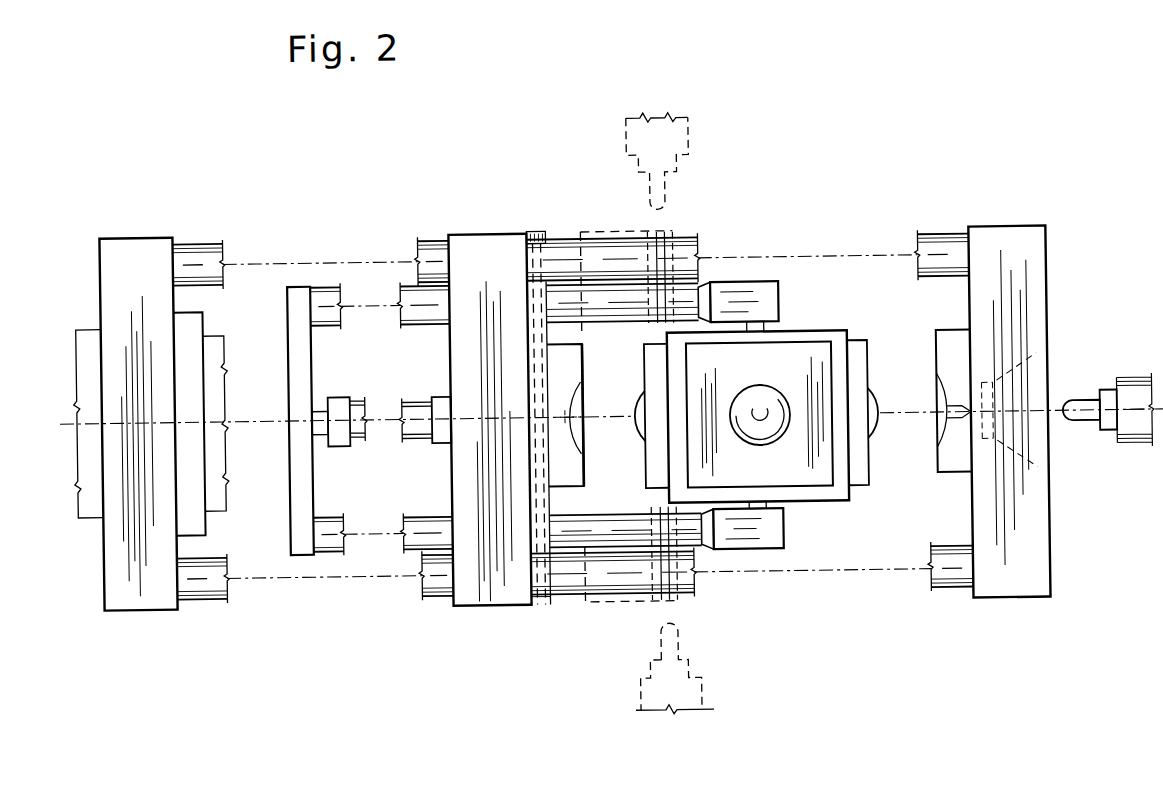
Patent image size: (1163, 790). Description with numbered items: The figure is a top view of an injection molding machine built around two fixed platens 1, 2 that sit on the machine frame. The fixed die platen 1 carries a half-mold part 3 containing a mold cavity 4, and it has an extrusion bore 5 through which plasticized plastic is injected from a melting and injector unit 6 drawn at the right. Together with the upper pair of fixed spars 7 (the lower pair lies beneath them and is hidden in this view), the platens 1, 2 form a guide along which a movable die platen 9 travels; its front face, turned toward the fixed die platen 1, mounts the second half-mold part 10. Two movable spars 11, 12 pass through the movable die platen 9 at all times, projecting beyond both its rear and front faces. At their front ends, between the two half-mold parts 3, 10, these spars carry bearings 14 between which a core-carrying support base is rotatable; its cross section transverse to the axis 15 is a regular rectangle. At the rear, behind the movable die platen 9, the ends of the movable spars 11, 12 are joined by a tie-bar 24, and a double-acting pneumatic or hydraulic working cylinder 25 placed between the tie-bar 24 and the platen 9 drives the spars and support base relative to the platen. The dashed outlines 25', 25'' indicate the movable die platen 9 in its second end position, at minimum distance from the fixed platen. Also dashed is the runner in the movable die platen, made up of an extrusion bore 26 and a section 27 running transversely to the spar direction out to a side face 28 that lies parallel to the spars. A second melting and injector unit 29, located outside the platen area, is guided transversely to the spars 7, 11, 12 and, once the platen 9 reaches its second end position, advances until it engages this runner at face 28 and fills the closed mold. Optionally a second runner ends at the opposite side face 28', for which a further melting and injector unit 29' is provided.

The fixed die platen 1 is at (983, 244).
The fixed platen 2 is at (112, 253).
The half-mold part 3 is at (955, 360).
The mold cavity 4 is at (942, 402).
The extrusion bore 5 is at (965, 421).
The melting and injector unit 6 is at (1085, 414).
The upper pair of spars 7 is at (196, 257).
The movable die platen 9 is at (475, 256).
The half-mold part 10 is at (562, 357).
The movable spar 11 is at (327, 526).
The movable spar 12 is at (322, 299).
The bearings 14 is at (763, 290).
The axis 15 is at (780, 293).
The tie-bar 24 is at (293, 294).
The working cylinder 25 is at (344, 307).
The upper guide strip 25' is at (543, 349).
The lower guide strip 25'' is at (726, 580).
The extrusion bore 26 is at (549, 607).
The runner section 27 is at (675, 254).
The side face 28 is at (626, 237).
The side face 28' is at (670, 624).
The second melting and injector unit 29 is at (691, 145).
The second melting and injector unit 29' is at (650, 669).